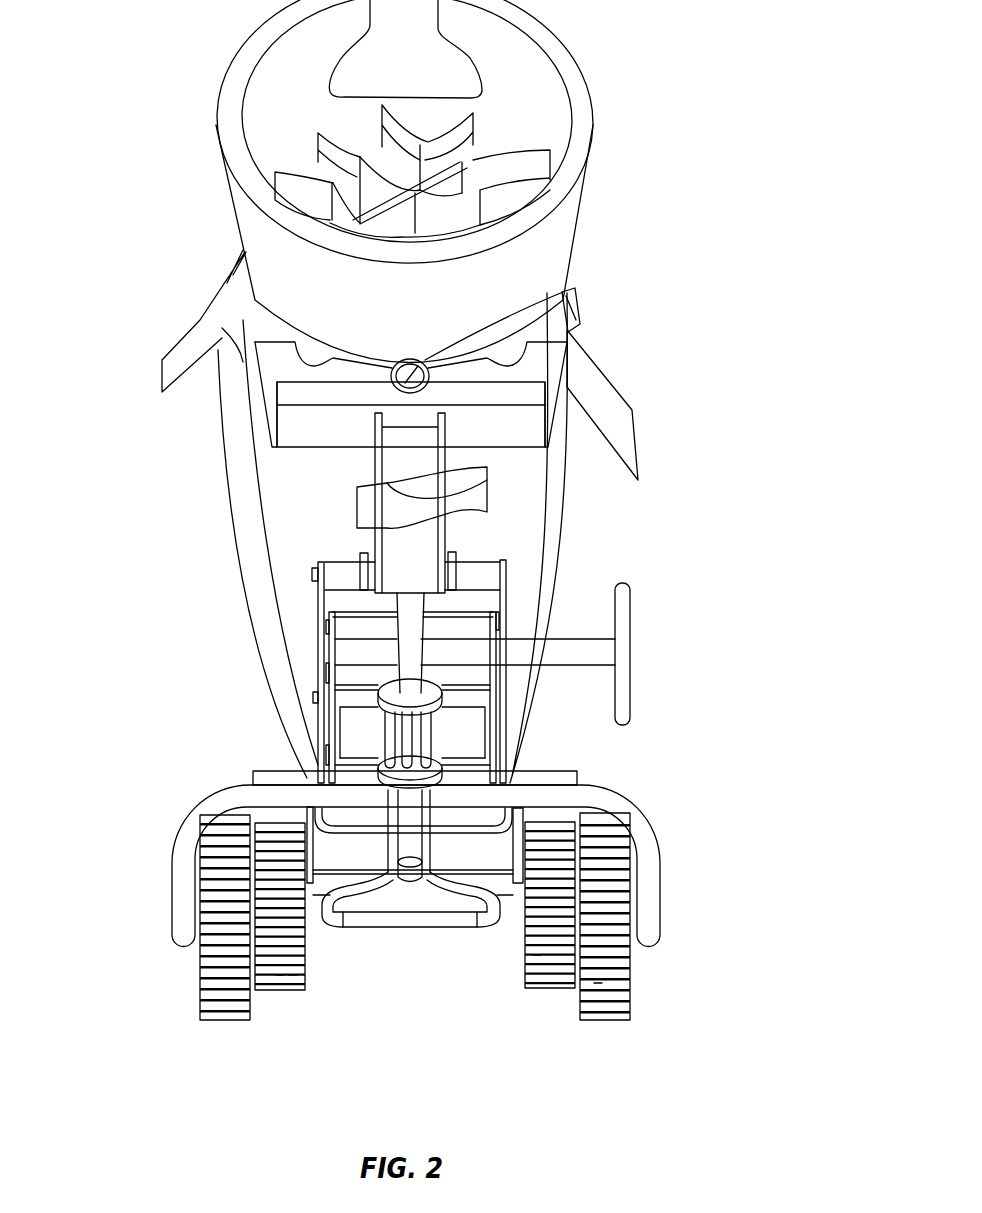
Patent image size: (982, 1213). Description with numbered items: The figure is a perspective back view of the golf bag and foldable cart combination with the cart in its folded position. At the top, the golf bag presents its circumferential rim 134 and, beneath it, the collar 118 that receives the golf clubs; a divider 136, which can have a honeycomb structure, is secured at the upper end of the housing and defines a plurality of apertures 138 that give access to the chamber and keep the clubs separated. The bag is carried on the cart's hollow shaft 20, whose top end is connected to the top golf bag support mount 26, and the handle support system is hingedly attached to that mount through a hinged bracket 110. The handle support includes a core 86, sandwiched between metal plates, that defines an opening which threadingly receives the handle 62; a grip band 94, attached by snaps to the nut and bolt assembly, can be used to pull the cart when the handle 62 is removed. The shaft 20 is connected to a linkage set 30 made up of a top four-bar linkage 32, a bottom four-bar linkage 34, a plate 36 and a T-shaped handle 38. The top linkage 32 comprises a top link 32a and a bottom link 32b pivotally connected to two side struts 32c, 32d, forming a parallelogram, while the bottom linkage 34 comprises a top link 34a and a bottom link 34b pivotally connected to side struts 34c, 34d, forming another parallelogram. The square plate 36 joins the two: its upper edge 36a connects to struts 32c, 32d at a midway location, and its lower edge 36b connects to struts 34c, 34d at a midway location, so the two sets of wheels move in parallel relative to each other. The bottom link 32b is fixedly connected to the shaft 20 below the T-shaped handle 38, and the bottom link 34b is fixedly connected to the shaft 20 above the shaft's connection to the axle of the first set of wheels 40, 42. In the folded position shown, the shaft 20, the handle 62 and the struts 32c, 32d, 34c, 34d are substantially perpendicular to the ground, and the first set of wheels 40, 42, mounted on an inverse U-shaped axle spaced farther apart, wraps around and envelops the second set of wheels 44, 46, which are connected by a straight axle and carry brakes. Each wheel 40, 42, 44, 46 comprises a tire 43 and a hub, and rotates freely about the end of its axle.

The circumferential rim 134 is at (572, 48).
The divider 136 is at (522, 143).
The apertures 138 is at (520, 178).
The collar 118 is at (530, 252).
The hollow shaft 20 is at (560, 293).
The top golf bag support mount 26 is at (547, 368).
The hinged bracket 110 is at (300, 393).
The core 86 is at (397, 467).
The grip band 94 is at (482, 492).
The handle 62 is at (407, 614).
The top link 32a is at (482, 572).
The side strut 32c is at (318, 608).
The side strut 32d is at (475, 620).
The top link 34a is at (503, 635).
The side strut 34c is at (329, 653).
The side strut 34d is at (503, 641).
The linkage set 30 is at (318, 632).
The top four-bar linkage 32 is at (342, 693).
The bottom four-bar linkage 34 is at (333, 738).
The T-shaped handle 38 is at (628, 638).
The upper edge 36a is at (462, 702).
The plate 36 is at (468, 730).
The bottom link 32b is at (502, 707).
The bottom link 34b is at (482, 775).
The lower edge 36b is at (472, 760).
The wheel 40 is at (217, 988).
The wheel 44 is at (243, 1002).
The wheel 46 is at (545, 965).
The wheel 42 is at (615, 962).
The tire 43 is at (598, 985).